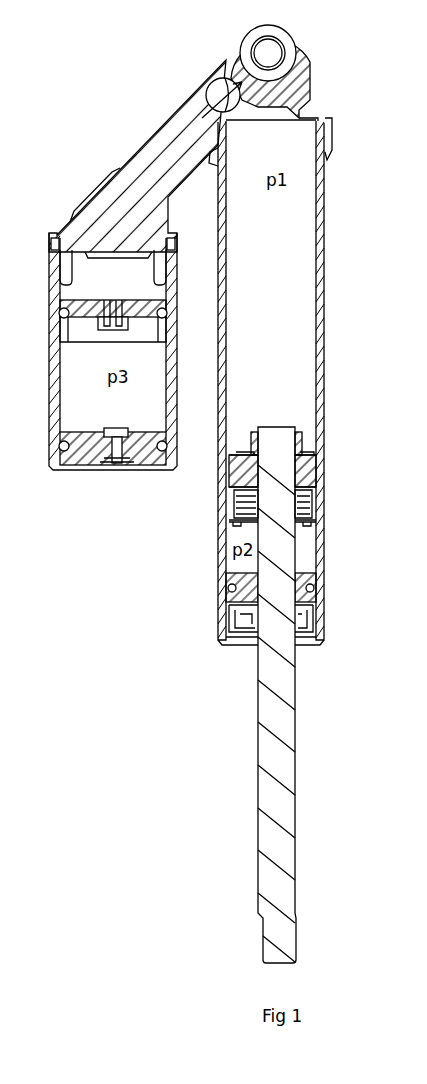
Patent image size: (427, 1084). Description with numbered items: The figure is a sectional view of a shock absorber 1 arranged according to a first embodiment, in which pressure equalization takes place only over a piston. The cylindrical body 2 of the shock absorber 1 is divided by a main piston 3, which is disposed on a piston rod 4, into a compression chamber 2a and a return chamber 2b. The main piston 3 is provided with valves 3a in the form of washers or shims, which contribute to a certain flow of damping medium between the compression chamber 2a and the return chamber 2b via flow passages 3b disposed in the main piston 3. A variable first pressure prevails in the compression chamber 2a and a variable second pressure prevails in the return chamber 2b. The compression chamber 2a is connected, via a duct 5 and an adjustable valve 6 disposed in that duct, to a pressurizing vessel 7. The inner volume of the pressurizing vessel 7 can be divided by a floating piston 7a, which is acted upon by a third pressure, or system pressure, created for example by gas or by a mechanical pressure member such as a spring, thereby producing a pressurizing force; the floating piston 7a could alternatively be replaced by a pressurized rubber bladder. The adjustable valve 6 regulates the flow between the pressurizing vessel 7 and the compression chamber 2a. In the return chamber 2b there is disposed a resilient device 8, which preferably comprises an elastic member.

The shock absorber 1 is at (342, 174).
The cylindrical body 2 is at (318, 241).
The compression chamber 2a is at (285, 301).
The return chamber 2b is at (307, 547).
The main piston 3 is at (312, 476).
The valves 3a is at (312, 493).
The flow passages 3b is at (300, 473).
The piston rod 4 is at (286, 736).
The duct 5 is at (175, 160).
The adjustable valve 6 is at (218, 80).
The pressurizing vessel 7 is at (48, 292).
The floating piston 7a is at (60, 330).
The resilient device 8 is at (312, 505).